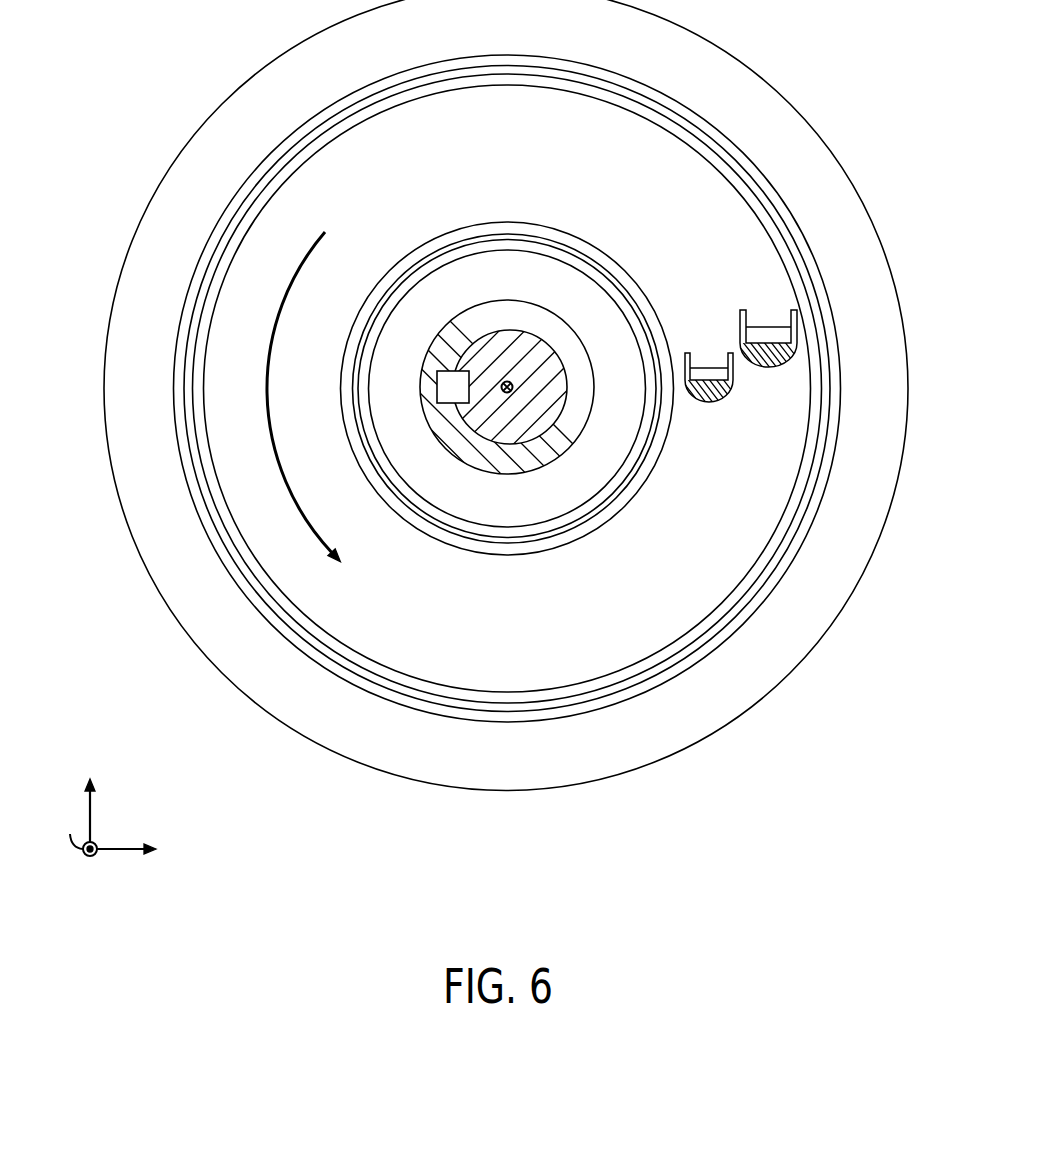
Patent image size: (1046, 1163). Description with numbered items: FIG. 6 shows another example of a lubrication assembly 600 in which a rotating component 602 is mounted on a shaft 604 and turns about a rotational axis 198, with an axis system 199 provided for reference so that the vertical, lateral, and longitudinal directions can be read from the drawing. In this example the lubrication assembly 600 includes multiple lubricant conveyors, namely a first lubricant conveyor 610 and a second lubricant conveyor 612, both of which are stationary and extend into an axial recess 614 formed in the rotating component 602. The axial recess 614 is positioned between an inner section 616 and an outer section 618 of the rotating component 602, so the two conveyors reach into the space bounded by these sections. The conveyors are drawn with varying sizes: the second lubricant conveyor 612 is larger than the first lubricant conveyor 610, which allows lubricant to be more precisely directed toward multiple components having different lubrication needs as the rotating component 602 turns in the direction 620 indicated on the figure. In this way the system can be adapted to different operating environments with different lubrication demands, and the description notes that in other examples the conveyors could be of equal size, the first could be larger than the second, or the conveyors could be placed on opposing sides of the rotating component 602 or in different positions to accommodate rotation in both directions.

The lubrication assembly 600 is at (896, 782).
The rotating component 602 is at (817, 700).
The shaft 604 is at (506, 406).
The rotational axis 198 is at (509, 380).
The axis system 199 is at (167, 797).
The first lubricant conveyor 610 is at (713, 416).
The second lubricant conveyor 612 is at (772, 386).
The axial recess 614 is at (763, 524).
The inner section 616 is at (423, 315).
The outer section 618 is at (153, 239).
The direction 620 is at (273, 455).